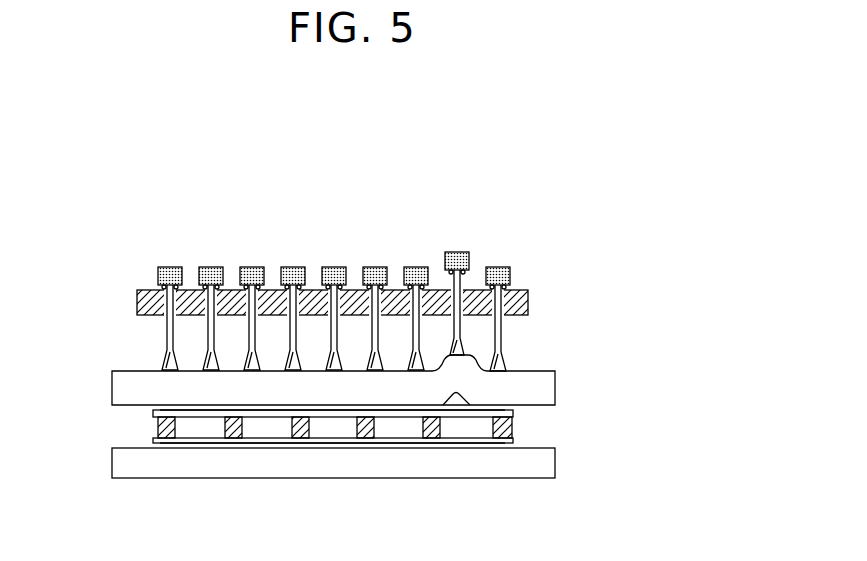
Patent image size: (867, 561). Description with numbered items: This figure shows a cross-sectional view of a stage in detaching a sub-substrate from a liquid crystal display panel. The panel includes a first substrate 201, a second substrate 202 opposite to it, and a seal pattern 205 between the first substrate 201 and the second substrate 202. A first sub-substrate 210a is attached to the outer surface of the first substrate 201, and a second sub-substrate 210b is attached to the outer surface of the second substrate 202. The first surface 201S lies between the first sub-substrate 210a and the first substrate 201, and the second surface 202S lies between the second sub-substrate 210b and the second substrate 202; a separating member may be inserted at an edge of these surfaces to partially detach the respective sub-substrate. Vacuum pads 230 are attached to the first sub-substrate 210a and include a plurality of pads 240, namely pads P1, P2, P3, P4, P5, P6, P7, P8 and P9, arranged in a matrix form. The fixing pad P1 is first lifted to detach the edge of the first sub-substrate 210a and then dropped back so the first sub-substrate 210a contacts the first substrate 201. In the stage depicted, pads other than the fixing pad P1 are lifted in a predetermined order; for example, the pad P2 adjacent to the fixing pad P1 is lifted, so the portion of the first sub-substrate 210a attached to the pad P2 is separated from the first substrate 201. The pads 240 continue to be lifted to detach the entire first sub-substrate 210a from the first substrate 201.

The vacuum pads 230 is at (344, 227).
The pads 240 is at (508, 268).
The fixing pad P1 is at (548, 314).
The pad P2 is at (452, 352).
The pad P3 is at (412, 366).
The pad P4 is at (371, 366).
The pad P5 is at (330, 366).
The pad P6 is at (289, 366).
The pad P7 is at (248, 366).
The pad P8 is at (207, 366).
The pad P9 is at (166, 366).
The first sub-substrate 210a is at (548, 388).
The second sub-substrate 210b is at (548, 465).
The first substrate 201 is at (152, 412).
The second substrate 202 is at (152, 441).
The first surface 201S is at (183, 410).
The second surface 202S is at (270, 443).
The seal pattern 205 is at (365, 438).